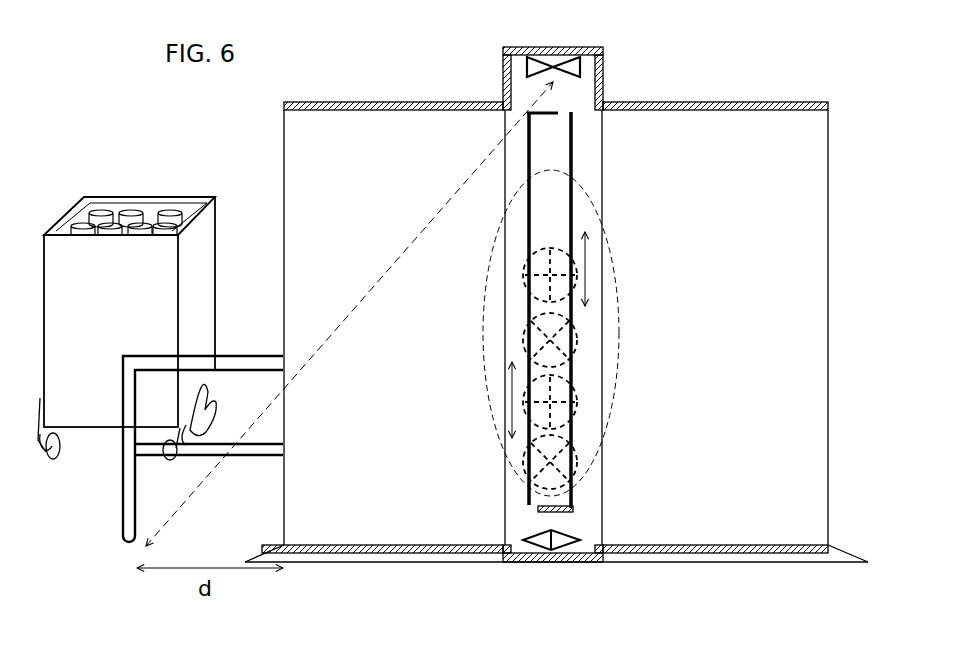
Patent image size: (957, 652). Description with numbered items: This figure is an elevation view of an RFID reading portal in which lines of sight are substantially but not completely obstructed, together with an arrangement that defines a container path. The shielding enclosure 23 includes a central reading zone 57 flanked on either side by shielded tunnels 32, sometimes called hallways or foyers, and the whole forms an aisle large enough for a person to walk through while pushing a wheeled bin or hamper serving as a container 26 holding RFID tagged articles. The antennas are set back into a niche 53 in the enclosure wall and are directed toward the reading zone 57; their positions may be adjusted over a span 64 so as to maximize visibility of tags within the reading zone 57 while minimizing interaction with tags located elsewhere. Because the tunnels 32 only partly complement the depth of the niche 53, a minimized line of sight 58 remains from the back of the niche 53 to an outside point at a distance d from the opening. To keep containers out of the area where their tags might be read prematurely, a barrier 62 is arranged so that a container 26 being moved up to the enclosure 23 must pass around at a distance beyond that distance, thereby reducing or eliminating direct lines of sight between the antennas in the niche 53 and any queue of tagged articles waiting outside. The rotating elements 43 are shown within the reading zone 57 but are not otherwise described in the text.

The enclosure 23 is at (668, 558).
The container 26 is at (150, 197).
The shielded tunnel 32 is at (378, 103).
The rotor / agitator 43 is at (586, 336).
The niche 53 is at (514, 52).
The reading zone 57 is at (608, 221).
The line of sight 58 is at (392, 262).
The barrier 62 is at (125, 536).
The span 64 is at (512, 405).